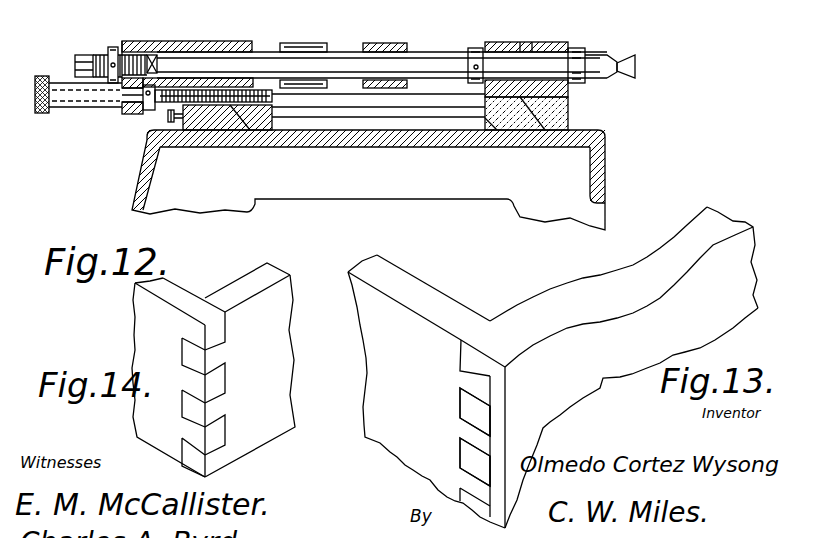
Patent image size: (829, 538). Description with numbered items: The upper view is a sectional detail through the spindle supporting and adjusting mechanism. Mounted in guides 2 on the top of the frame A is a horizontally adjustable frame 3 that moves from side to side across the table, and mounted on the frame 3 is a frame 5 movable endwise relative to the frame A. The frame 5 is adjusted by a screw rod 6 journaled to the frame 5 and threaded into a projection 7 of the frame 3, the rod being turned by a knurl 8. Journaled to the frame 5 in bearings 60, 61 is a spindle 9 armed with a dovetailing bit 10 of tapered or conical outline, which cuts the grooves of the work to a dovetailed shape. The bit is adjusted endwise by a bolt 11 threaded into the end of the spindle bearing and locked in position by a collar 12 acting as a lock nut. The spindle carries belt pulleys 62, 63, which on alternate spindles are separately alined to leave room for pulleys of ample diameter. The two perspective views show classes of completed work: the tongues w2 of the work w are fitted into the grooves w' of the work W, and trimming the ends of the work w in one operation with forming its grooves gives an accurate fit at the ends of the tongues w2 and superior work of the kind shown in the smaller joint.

In FIG. 12, the frame A is at (553, 150).
In FIG. 12, the guides 2 is at (233, 128).
In FIG. 12, the horizontally adjustable frame 3 is at (293, 155).
In FIG. 12, the frame 5 is at (118, 115).
In FIG. 12, the screw rod 6 is at (150, 112).
In FIG. 12, the projection 7 is at (272, 88).
In FIG. 12, the knurl 8 is at (42, 116).
In FIG. 12, the spindles 9 is at (432, 52).
In FIG. 12, the dovetailing bits 10 is at (640, 67).
In FIG. 12, the bolts 11 is at (96, 50).
In FIG. 12, the collars 12 is at (113, 45).
In FIG. 12, the bearing 60 is at (510, 42).
In FIG. 12, the bearing 61 is at (210, 41).
In FIG. 12, the belt pulley 62 is at (300, 42).
In FIG. 12, the belt pulley 63 is at (382, 42).
In FIG. 13, the work w is at (426, 391).
In FIG. 13, the work W is at (532, 297).
In FIG. 14, the grooves w' is at (213, 365).
In FIG. 13, the grooves w' is at (494, 412).
In FIG. 13, the tongues w2 is at (472, 437).